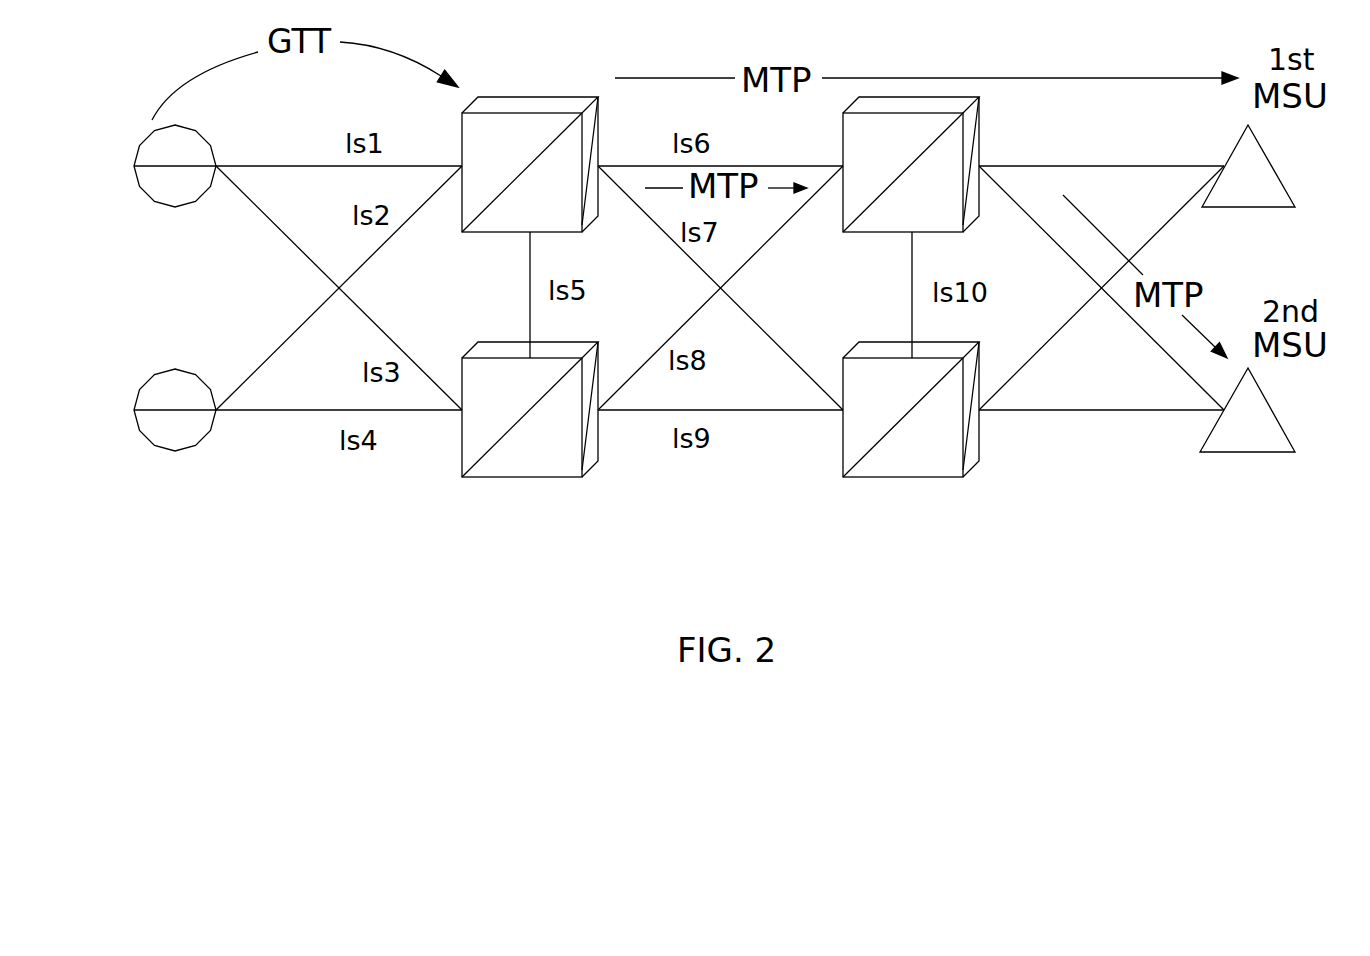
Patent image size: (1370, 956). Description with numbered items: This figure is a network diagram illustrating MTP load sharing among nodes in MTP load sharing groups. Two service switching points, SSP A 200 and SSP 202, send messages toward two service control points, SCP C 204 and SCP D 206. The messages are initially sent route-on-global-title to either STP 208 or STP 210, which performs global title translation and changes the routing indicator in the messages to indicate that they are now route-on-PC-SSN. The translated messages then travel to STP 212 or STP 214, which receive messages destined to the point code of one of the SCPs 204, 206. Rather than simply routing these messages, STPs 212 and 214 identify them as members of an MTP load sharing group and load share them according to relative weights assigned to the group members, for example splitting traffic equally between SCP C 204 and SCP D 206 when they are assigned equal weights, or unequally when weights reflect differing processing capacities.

The SSP A 200 is at (138, 147).
The SSP 202 is at (138, 391).
The SCP C 204 is at (1272, 165).
The SCP D 206 is at (1272, 408).
The STP 208 is at (502, 97).
The STP 210 is at (502, 342).
The STP 212 is at (885, 97).
The STP 214 is at (885, 342).